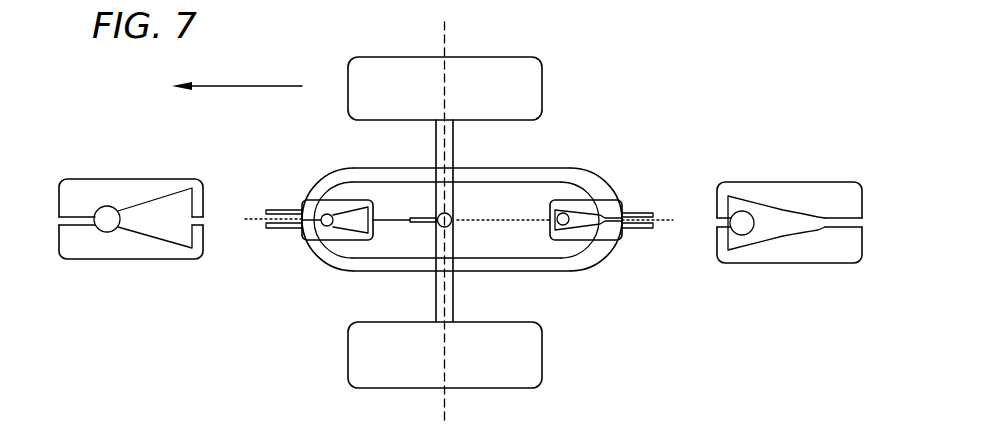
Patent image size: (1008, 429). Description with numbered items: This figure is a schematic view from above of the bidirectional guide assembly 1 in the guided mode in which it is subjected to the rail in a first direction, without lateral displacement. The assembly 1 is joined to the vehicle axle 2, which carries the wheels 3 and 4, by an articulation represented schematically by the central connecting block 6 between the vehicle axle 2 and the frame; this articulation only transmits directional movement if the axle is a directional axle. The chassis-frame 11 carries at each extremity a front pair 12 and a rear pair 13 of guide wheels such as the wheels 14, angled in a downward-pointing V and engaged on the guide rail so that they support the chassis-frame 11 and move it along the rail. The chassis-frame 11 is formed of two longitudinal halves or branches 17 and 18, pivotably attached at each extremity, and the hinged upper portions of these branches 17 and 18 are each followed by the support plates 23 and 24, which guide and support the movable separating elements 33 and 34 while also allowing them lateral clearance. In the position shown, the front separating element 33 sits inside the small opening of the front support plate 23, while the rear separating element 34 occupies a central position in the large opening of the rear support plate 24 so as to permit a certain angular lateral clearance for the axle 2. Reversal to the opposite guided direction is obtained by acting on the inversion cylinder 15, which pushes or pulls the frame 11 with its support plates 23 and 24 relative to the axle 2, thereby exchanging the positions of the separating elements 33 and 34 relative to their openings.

The bidirectional guide assembly 1 is at (645, 113).
The vehicle axle 2 is at (455, 143).
The wheel 3 is at (520, 93).
The wheel 4 is at (522, 357).
The central connecting block 6 is at (455, 218).
The chassis-frame 11 is at (350, 277).
The front pair of guide wheels 12 is at (258, 202).
The rear pair of guide wheels 13 is at (653, 208).
The guide wheel 14 is at (267, 230).
The inversion cylinder 15 is at (417, 228).
The branch 17 is at (383, 173).
The branch 18 is at (502, 264).
The support plate 23 is at (303, 245).
The support plate 24 is at (620, 253).
The movable separating element 33 is at (325, 215).
The movable separating element 34 is at (563, 213).